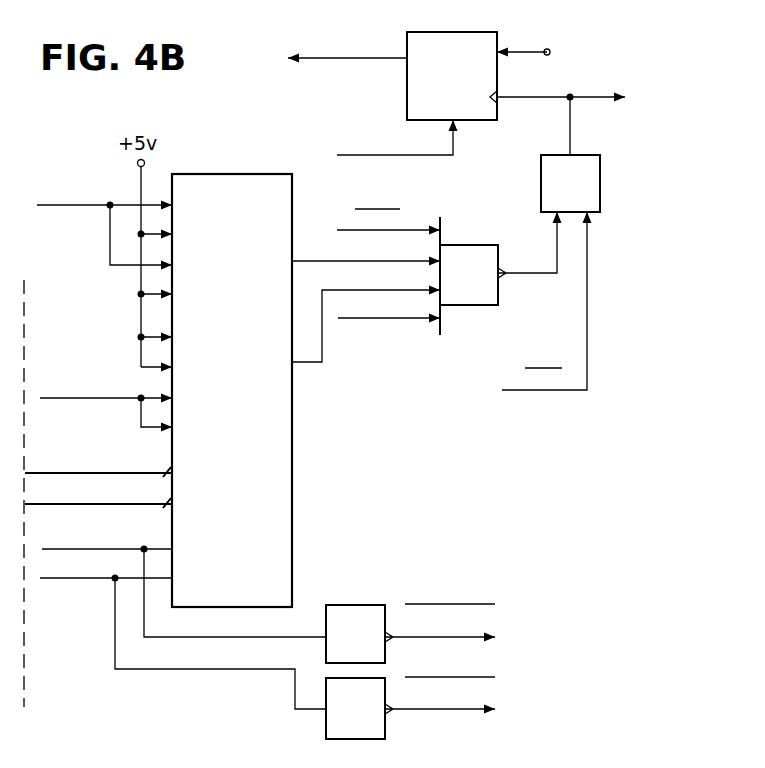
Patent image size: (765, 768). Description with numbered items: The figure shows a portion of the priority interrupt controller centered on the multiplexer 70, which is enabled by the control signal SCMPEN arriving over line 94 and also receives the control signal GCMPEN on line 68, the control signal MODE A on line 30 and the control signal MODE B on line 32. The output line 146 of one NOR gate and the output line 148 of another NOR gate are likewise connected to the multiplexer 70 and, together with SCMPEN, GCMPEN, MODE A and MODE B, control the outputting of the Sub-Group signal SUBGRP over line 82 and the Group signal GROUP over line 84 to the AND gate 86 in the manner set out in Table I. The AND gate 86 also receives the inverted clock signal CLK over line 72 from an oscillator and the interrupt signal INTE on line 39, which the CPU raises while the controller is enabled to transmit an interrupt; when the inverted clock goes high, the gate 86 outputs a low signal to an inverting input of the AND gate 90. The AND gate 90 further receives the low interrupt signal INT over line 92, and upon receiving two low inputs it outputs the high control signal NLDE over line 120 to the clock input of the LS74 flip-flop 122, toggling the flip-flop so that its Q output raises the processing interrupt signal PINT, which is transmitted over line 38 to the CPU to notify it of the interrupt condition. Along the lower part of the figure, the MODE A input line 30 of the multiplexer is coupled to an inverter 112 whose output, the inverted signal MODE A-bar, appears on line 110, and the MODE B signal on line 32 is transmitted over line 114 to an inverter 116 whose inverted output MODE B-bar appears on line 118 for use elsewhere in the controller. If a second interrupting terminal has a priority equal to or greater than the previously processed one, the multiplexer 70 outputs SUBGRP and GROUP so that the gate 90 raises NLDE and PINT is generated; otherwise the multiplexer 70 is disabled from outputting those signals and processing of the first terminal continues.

The line 30 is at (42, 549).
The line 32 is at (88, 582).
The line 38 is at (362, 59).
The line 39 is at (366, 321).
The line 68 is at (110, 402).
The multiplexer 70 is at (250, 178).
The line 72 is at (356, 228).
The line 82 is at (307, 260).
The line 84 is at (326, 359).
The AND gate 86 is at (472, 250).
The AND gate 90 is at (600, 177).
The line 92 is at (588, 272).
The line 94 is at (80, 207).
The line 110 is at (440, 636).
The inverter 112 is at (366, 608).
The line 114 is at (210, 674).
The inverter 116 is at (335, 731).
The line 118 is at (470, 712).
The line 120 is at (572, 117).
The LS74 flip-flop 122 is at (461, 33).
The output line 146 is at (85, 472).
The output line 148 is at (70, 503).